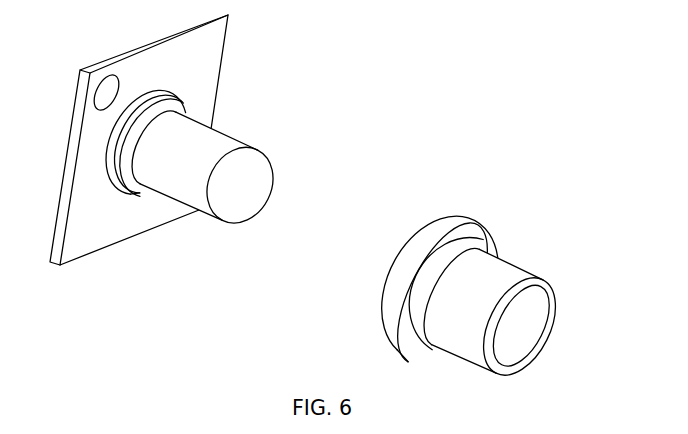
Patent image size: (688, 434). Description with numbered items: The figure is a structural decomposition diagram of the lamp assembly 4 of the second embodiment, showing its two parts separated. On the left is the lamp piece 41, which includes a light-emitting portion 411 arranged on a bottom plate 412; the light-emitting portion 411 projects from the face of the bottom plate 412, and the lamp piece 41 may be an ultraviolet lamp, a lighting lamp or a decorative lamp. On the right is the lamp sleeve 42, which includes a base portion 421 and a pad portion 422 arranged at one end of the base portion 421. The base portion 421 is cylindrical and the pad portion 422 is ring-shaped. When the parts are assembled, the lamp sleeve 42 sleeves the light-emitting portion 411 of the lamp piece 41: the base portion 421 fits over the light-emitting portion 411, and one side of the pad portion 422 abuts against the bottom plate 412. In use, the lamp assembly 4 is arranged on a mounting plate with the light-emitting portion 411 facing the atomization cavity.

The lamp assembly 4 is at (320, 194).
The lamp piece 41 is at (194, 133).
The light-emitting portion 411 is at (207, 145).
The bottom plate 412 is at (150, 64).
The lamp sleeve 42 is at (482, 268).
The base portion 421 is at (482, 282).
The pad portion 422 is at (442, 223).